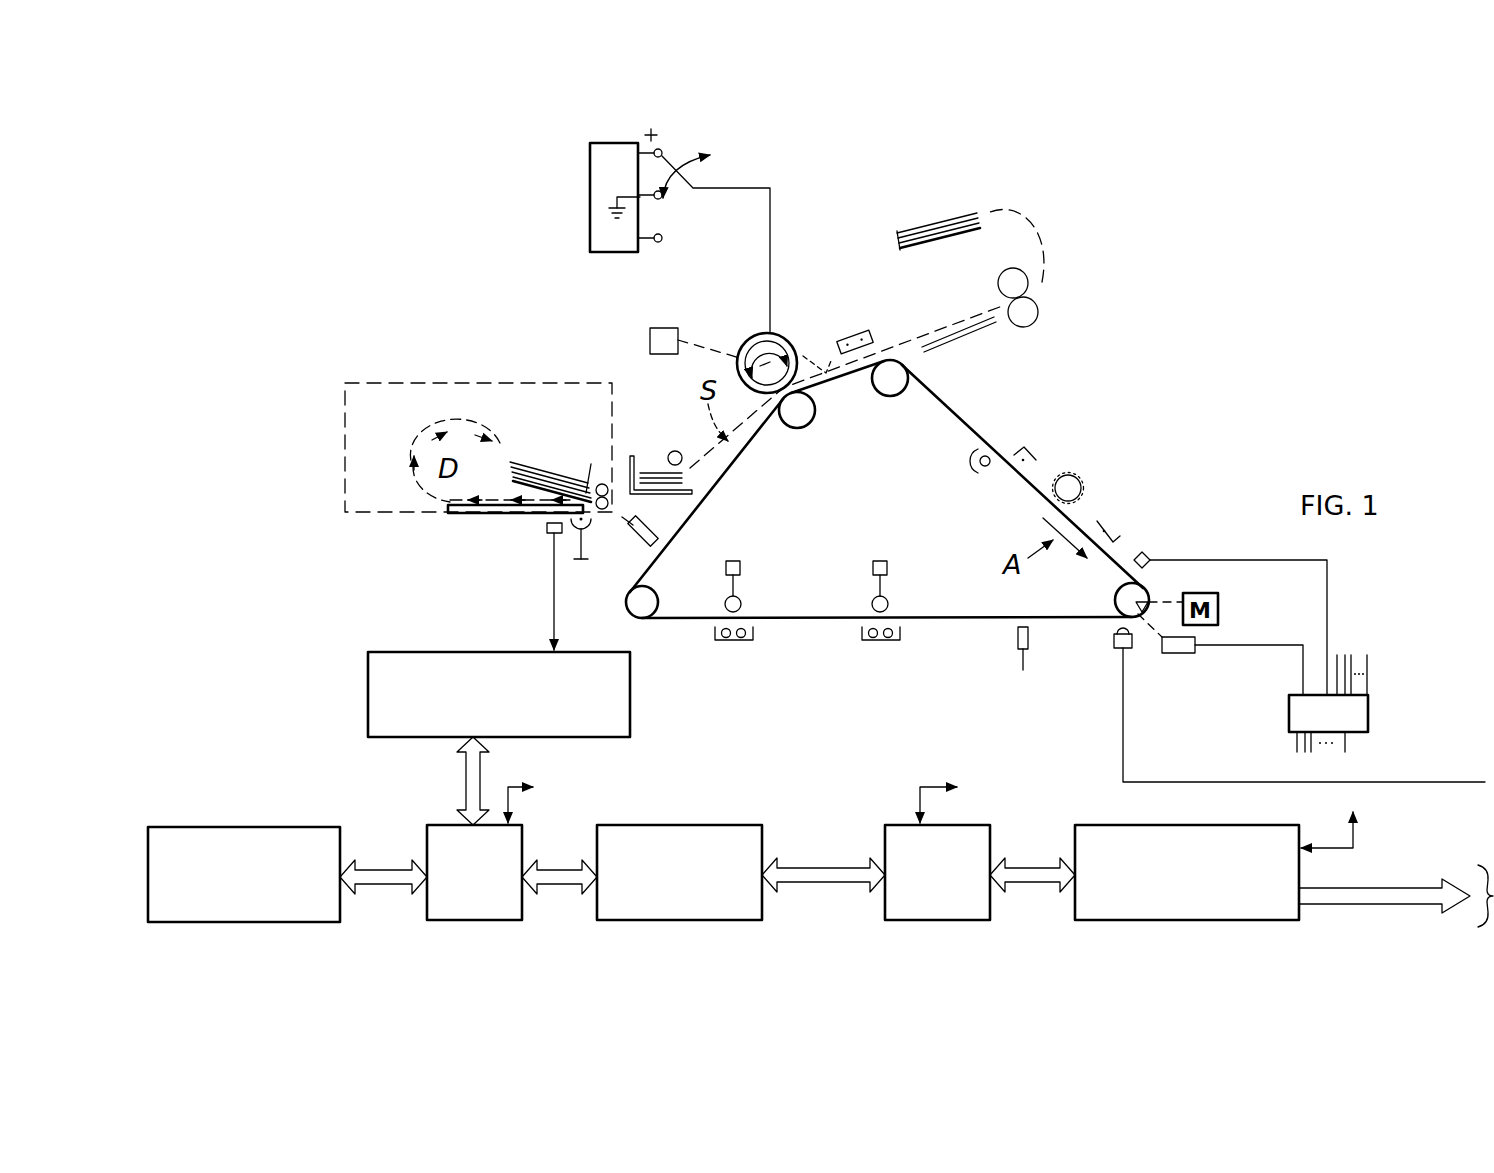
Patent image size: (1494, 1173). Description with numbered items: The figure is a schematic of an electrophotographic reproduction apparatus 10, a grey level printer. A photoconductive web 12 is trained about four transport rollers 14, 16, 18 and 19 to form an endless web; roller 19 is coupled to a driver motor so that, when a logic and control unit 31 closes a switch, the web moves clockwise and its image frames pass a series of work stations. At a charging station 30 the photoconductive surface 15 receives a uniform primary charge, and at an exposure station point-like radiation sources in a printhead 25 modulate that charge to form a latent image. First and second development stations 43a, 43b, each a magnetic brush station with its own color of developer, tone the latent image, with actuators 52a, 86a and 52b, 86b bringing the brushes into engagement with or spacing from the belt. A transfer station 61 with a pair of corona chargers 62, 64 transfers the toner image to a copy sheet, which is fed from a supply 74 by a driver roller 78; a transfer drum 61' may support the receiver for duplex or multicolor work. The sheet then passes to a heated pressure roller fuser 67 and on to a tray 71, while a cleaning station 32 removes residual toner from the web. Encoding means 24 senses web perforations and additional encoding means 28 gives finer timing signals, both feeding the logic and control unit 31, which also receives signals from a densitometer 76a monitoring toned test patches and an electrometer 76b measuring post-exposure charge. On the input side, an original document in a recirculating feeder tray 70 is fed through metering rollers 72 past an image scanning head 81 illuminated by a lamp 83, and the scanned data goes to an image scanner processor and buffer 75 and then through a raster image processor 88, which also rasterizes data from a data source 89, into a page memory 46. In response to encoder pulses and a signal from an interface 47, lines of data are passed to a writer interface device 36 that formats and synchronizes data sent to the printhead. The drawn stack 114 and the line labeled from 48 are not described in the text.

The electrophotographic reproduction apparatus 10 is at (1122, 438).
The photoconductive web 12 is at (973, 430).
The transport roller 14 is at (890, 396).
The photoconductive surface 15 is at (940, 398).
The transport roller 16 is at (799, 428).
The transport roller 18 is at (645, 618).
The transport roller 19 is at (1115, 600).
The encoding means 24 is at (1151, 556).
The printhead 25 is at (1113, 643).
The additional encoding means 28 is at (1196, 638).
The charging station 30 is at (1118, 528).
The logic and control unit 31 is at (1370, 720).
The cleaning station 32 is at (1093, 479).
The writer interface device 36 is at (1158, 922).
The first development station 43a is at (753, 637).
The second development station 43b is at (873, 641).
The page memory 46 is at (648, 920).
The interface 47 is at (947, 922).
The data source 48 is at (366, 718).
The actuator 52a is at (740, 564).
The actuator 52b is at (887, 564).
The transfer station 61 is at (888, 289).
The transfer drum 61' is at (704, 261).
The corona charger 62 is at (842, 336).
The corona charger 64 is at (874, 333).
The heated pressure roller fuser 67 is at (1040, 312).
The recirculating feeder tray 70 is at (434, 383).
The tray 71 is at (948, 248).
The metering rollers 72 is at (608, 497).
The supply 74 is at (637, 456).
The image scanner processor and buffer 75 is at (630, 708).
The densitometer 76a is at (638, 547).
The electrometer 76b is at (1016, 641).
The driver roller 78 is at (675, 450).
The image scanning head 81 is at (547, 528).
The lamp 83 is at (597, 539).
The actuator 86a is at (742, 604).
The actuator 86b is at (889, 604).
The raster image processor 88 is at (465, 920).
The data source 89 is at (250, 922).
The document stack 114 is at (592, 465).